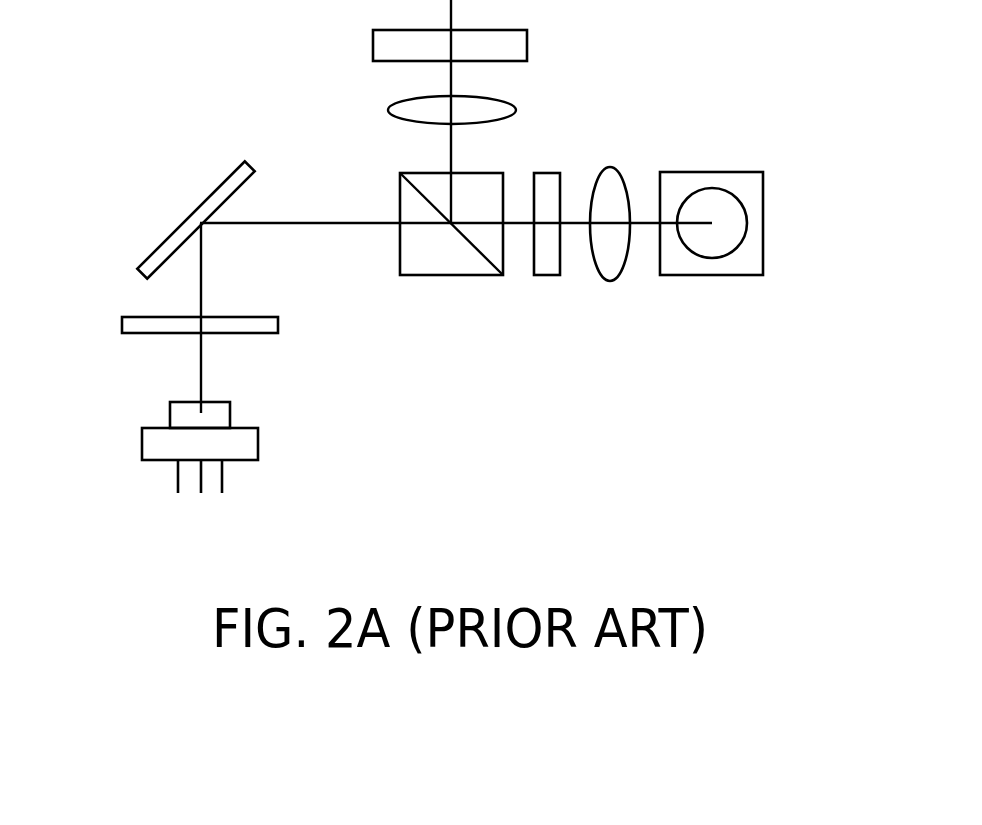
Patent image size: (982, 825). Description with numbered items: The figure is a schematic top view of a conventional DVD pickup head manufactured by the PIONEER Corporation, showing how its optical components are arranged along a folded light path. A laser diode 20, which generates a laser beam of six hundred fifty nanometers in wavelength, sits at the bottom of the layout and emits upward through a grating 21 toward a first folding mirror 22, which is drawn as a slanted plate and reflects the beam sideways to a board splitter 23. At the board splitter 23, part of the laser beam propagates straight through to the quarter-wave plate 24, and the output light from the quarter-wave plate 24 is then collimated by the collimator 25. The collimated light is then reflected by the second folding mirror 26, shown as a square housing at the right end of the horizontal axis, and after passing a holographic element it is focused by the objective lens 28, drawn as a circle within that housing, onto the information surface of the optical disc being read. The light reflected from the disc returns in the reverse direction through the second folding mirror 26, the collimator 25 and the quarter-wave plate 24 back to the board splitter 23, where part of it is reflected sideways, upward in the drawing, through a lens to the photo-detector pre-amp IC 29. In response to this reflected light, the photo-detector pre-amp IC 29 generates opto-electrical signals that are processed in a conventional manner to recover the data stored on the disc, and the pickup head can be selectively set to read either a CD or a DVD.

The laser diode 20 is at (143, 443).
The grating 21 is at (133, 335).
The first folding mirror 22 is at (155, 243).
The board splitter 23 is at (432, 275).
The quarter-wave plate 24 is at (548, 275).
The collimator 25 is at (615, 168).
The second folding mirror 26 is at (763, 250).
The objective lens 28 is at (738, 200).
The photo-detector pre-amp IC 29 is at (527, 40).